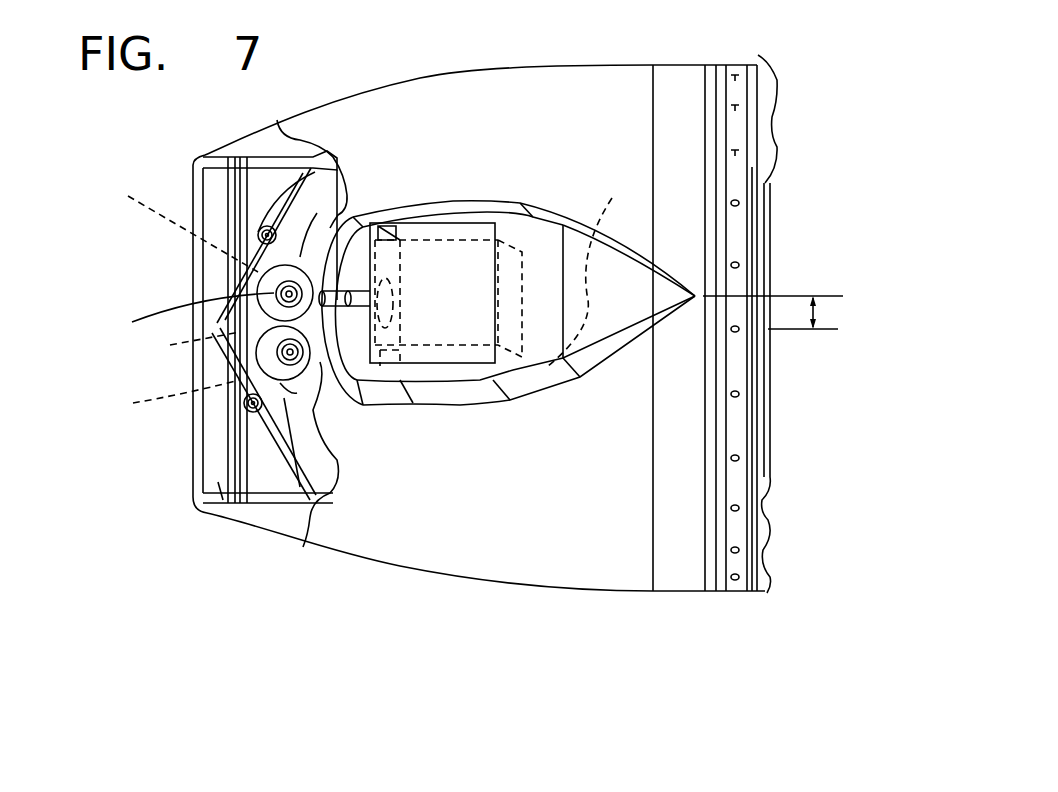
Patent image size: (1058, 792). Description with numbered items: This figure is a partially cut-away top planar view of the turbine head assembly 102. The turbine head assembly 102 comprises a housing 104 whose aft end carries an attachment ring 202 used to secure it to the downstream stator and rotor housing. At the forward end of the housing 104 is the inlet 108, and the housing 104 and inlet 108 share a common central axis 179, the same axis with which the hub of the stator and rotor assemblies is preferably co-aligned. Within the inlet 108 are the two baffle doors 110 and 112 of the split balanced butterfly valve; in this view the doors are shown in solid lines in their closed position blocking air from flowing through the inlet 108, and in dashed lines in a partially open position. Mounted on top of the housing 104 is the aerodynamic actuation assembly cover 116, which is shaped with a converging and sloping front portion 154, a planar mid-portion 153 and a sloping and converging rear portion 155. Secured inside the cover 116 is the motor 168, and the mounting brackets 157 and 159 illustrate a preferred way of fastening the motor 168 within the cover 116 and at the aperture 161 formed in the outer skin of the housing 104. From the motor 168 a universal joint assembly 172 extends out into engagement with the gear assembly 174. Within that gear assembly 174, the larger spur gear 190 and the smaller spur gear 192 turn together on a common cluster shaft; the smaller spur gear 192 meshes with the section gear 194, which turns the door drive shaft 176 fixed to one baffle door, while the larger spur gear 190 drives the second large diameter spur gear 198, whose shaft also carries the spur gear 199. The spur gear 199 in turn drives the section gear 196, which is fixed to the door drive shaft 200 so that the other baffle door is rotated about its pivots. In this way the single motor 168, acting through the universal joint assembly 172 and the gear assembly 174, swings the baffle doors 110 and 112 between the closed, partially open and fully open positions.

The turbine head assembly 102 is at (577, 597).
The housing 104 is at (605, 543).
The inlet 108 is at (205, 512).
The baffle door 110 is at (176, 258).
The baffle door 112 is at (159, 379).
The aerodynamic actuation assembly cover 116 is at (548, 375).
The planar mid-portion 153 is at (543, 257).
The converging and sloping front portion 154 is at (350, 265).
The sloping and converging rear portion 155 is at (637, 302).
The mounting bracket 157 is at (400, 252).
The mounting bracket 159 is at (420, 380).
The aperture 161 is at (595, 269).
The motor 168 is at (467, 292).
The universal joint assembly 172 is at (368, 380).
The gear assembly 174 is at (289, 272).
The door drive shaft 176 is at (258, 230).
The central axis 179 is at (814, 313).
The larger spur gear 190 is at (265, 352).
The smaller spur gear 192 is at (274, 294).
The section gear 194 is at (311, 168).
The section gear 196 is at (284, 398).
The second large diameter spur gear 198 is at (246, 410).
The spur gear 199 is at (312, 380).
The door drive shaft 200 is at (262, 430).
The attachment ring 202 is at (738, 560).